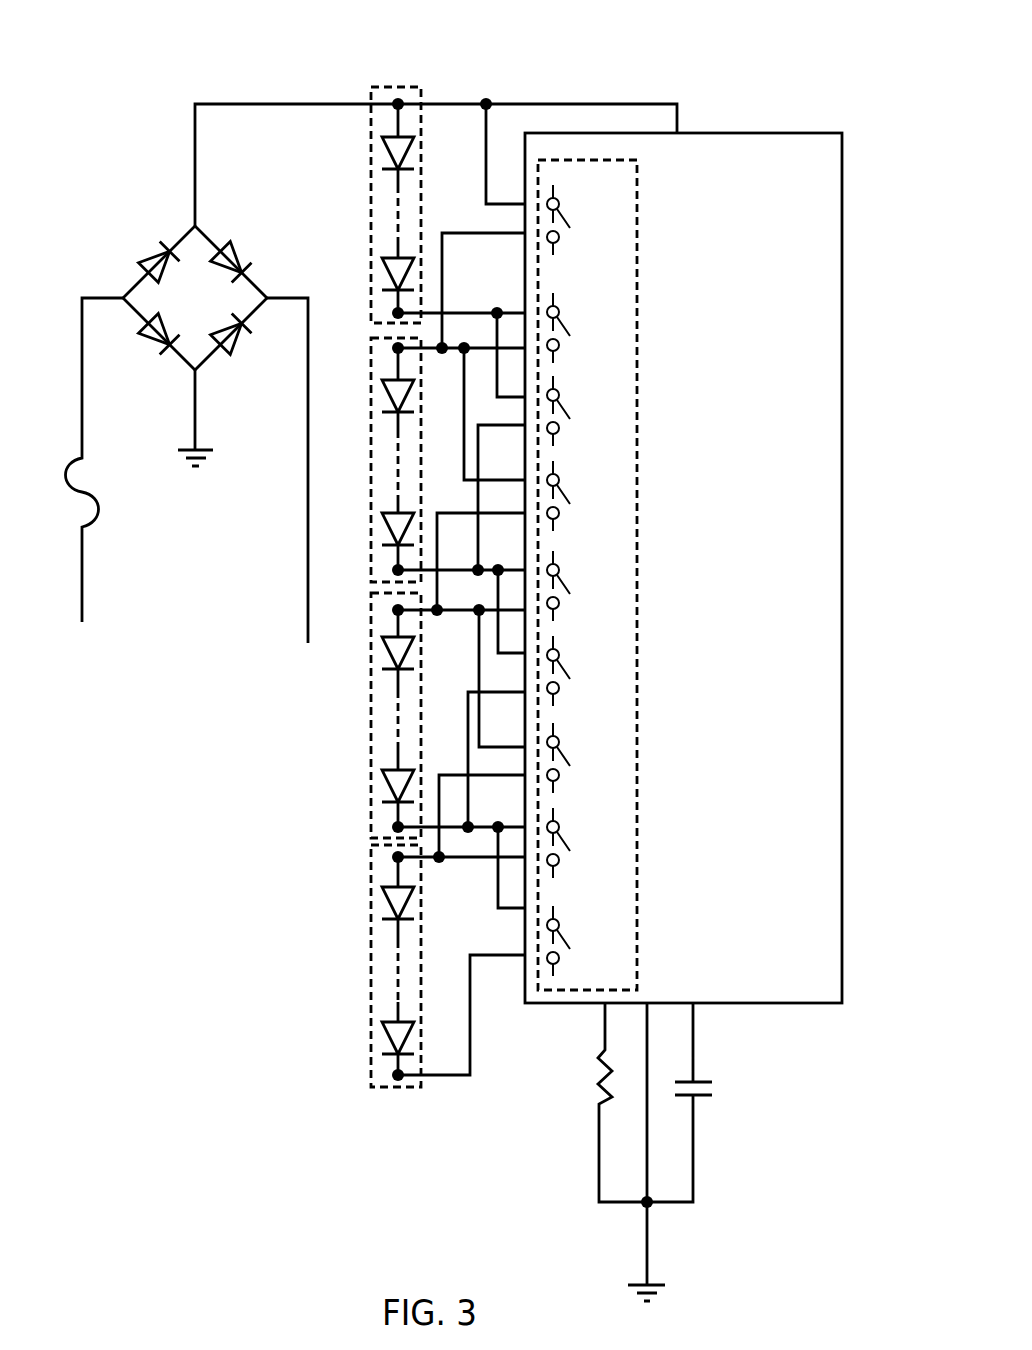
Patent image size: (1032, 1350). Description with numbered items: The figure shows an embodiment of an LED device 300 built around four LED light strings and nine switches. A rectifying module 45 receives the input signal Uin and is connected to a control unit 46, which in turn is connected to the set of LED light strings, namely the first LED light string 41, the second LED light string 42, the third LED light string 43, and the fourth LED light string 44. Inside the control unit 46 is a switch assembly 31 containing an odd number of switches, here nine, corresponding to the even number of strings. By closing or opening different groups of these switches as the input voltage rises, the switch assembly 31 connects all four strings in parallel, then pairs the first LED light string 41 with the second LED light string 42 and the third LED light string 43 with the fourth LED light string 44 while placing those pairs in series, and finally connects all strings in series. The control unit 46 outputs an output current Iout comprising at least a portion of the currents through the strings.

The LED device 300 is at (453, 653).
The rectifying module 45 is at (142, 242).
The first LED light string 41 is at (382, 202).
The second LED light string 42 is at (385, 470).
The third LED light string 43 is at (382, 732).
The fourth LED light string 44 is at (377, 967).
The switch assembly 31 is at (637, 290).
The control unit 46 is at (807, 393).